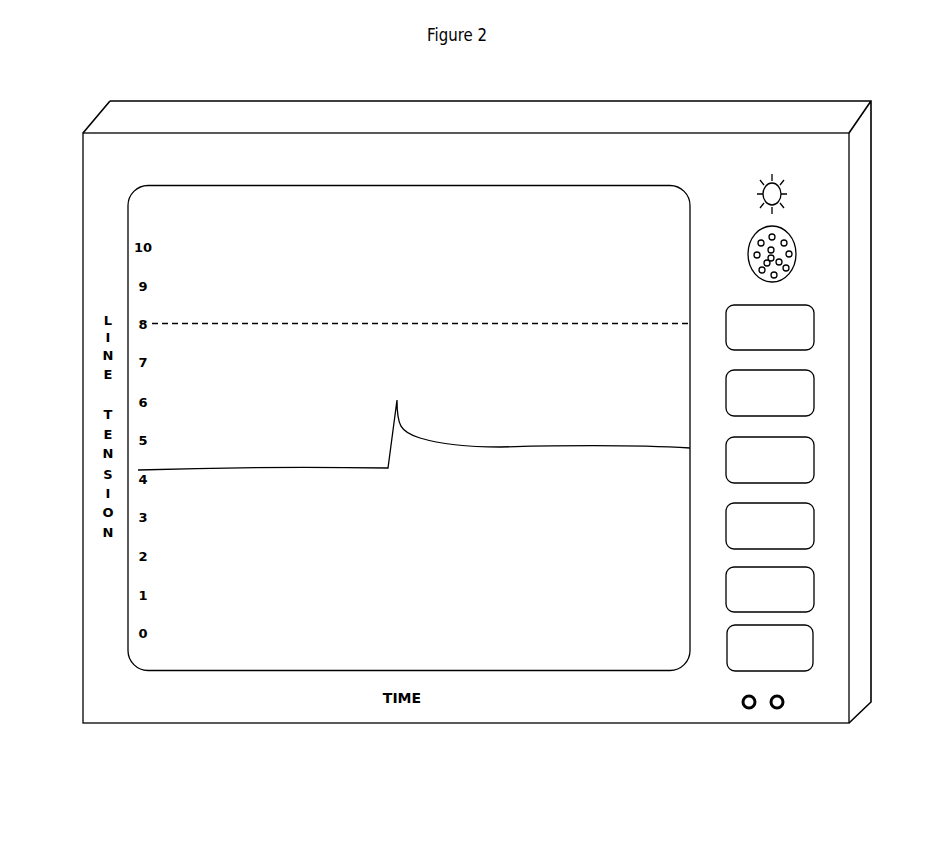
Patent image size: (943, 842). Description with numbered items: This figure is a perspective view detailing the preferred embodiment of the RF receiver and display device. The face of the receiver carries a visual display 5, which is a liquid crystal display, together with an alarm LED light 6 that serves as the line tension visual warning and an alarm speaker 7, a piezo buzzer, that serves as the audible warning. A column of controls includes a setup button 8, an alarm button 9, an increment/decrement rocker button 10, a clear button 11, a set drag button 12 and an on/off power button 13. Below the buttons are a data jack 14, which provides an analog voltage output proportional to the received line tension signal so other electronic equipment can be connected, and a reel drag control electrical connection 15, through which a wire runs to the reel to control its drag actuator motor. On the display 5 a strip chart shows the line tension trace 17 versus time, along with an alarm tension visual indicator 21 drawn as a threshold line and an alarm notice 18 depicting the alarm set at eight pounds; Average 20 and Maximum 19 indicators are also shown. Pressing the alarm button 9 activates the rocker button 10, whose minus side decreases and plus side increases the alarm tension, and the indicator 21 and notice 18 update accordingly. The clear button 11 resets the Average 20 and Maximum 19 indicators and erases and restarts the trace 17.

The visual display 5 is at (498, 207).
The alarm LED light 6 is at (774, 194).
The alarm speaker 7 is at (790, 254).
The setup button 8 is at (800, 327).
The alarm button 9 is at (800, 392).
The increment/decrement button 10 is at (810, 459).
The clear button 11 is at (803, 527).
The set drag button 12 is at (803, 591).
The on/off power button 13 is at (800, 649).
The data jack 14 is at (784, 701).
The reel drag control electrical connection 15 is at (751, 708).
The line tension trace 17 is at (485, 452).
The line tension alarm notice 18 is at (460, 660).
The Maximum indicator 19 is at (333, 657).
The Average indicator 20 is at (233, 657).
The alarm tension visual indicator 21 is at (233, 322).